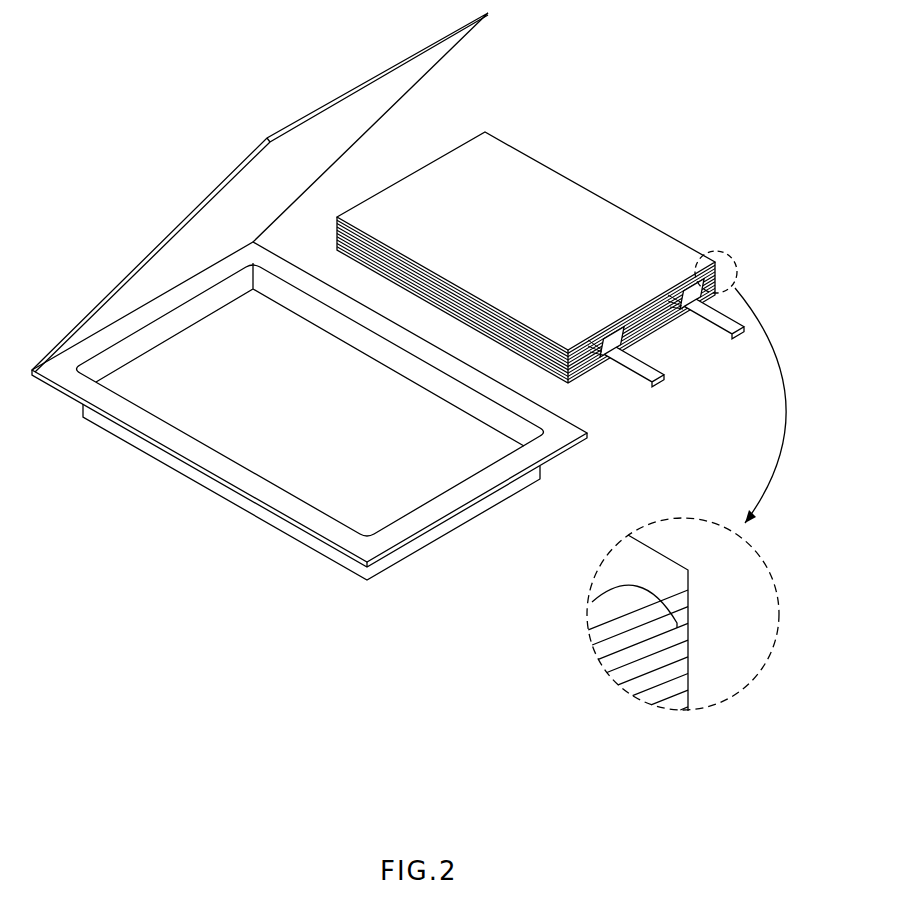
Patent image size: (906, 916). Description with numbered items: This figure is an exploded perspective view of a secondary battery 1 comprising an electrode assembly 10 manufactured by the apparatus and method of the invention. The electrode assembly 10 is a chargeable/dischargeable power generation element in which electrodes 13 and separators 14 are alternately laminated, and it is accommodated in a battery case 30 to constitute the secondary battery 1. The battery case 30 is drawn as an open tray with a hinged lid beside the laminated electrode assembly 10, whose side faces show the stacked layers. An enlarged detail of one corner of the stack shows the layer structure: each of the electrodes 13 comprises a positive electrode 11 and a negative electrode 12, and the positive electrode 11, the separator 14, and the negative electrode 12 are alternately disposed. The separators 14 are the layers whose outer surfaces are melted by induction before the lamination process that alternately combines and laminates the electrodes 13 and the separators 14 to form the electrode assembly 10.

The secondary battery 1 is at (731, 67).
The electrode assembly 10 is at (546, 152).
The positive electrode 11 is at (620, 677).
The negative electrode 12 is at (605, 653).
The electrodes 13 is at (487, 628).
The separators 14 is at (628, 615).
The battery case 30 is at (271, 538).